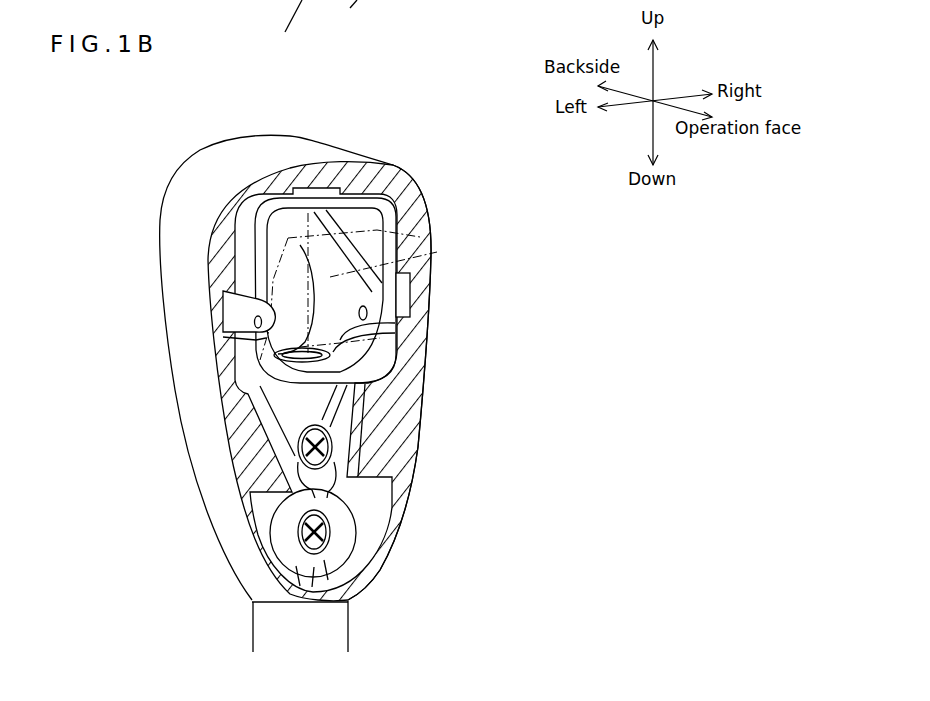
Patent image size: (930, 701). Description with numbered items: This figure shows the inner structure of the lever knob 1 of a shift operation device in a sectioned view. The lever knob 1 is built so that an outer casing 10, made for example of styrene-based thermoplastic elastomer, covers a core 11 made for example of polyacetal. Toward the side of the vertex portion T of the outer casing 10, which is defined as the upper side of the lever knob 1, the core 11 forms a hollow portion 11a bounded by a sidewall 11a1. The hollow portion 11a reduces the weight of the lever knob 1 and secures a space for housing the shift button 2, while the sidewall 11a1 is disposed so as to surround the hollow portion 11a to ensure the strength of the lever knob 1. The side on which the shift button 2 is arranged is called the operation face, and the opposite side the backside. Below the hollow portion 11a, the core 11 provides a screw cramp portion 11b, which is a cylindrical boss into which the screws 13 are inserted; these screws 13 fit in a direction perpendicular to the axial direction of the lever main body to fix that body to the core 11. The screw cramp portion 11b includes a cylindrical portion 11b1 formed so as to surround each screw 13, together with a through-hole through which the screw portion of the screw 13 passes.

The lever knob 1 is at (419, 174).
The shift button 2 is at (397, 253).
The outer casing 10 is at (327, 157).
The core 11 is at (330, 403).
The hollow portion 11a is at (340, 353).
The sidewall 11a1 is at (250, 269).
The screw cramp portion 11b is at (338, 432).
The cylindrical portion 11b1 is at (336, 545).
The screws 13 is at (310, 580).
The vertex portion T is at (253, 147).